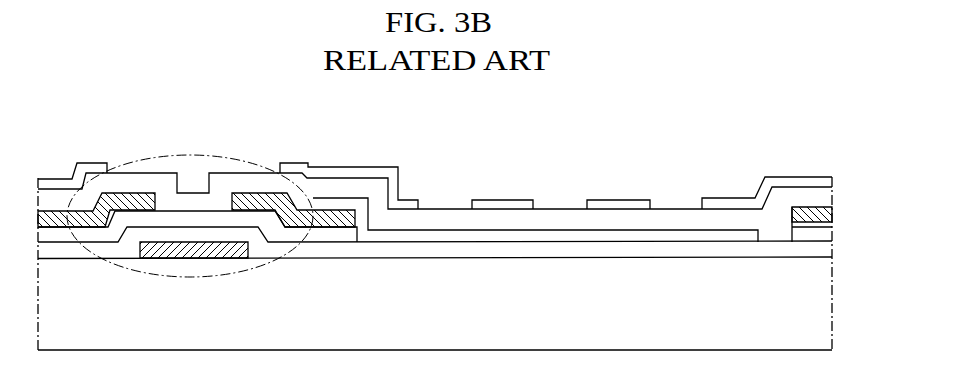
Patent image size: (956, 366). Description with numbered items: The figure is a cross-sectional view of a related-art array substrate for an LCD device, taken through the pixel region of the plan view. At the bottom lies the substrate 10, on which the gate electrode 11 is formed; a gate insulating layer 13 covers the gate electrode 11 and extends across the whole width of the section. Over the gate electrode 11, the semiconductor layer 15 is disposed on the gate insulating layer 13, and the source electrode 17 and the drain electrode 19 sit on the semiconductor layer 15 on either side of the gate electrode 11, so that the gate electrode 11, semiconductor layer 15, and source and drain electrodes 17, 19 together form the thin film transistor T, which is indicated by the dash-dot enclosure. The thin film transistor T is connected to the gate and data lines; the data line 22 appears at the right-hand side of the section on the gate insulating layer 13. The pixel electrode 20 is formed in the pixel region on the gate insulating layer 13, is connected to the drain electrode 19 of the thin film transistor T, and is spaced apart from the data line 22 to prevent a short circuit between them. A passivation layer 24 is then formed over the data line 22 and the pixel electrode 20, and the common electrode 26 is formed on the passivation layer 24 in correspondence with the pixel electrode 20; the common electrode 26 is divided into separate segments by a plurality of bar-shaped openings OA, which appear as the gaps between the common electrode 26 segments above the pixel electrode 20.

The substrate 10 is at (803, 321).
The gate electrode 11 is at (173, 250).
The gate insulating layer 13 is at (402, 247).
The semiconductor layer 15 is at (95, 232).
The source electrode 17 is at (130, 197).
The drain electrode 19 is at (256, 197).
The pixel electrode 20 is at (527, 234).
The data line 22 is at (808, 214).
The passivation layer 24 is at (681, 221).
The common electrode 26 is at (350, 173).
The bar-shaped openings OA is at (567, 207).
The thin film transistor T is at (247, 272).